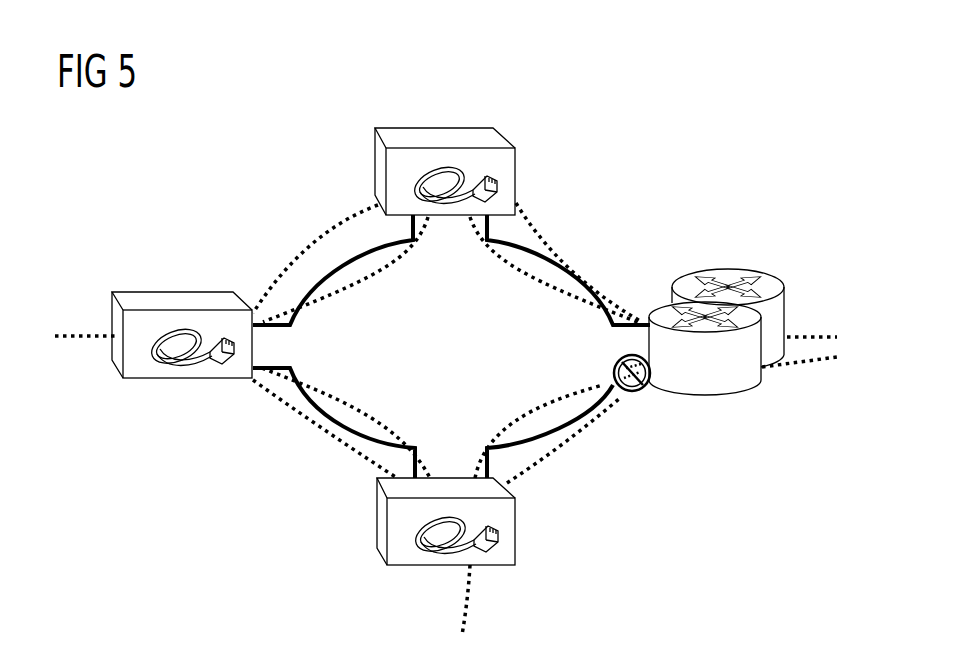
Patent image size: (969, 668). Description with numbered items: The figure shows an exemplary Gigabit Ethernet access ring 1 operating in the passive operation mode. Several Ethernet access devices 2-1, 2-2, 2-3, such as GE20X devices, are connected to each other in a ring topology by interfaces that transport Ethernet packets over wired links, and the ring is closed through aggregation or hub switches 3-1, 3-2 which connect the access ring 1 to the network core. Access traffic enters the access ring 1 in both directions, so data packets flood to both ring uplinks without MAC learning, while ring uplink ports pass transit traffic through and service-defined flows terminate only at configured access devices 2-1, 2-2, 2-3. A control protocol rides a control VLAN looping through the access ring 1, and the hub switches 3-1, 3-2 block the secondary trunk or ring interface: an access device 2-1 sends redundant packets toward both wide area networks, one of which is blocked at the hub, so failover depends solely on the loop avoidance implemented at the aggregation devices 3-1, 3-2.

The access ring 1 is at (694, 146).
The access device 2-1 is at (515, 182).
The access device 2-2 is at (170, 292).
The access device 2-3 is at (515, 532).
The aggregation device 3-1 is at (730, 268).
The aggregation device 3-2 is at (660, 308).